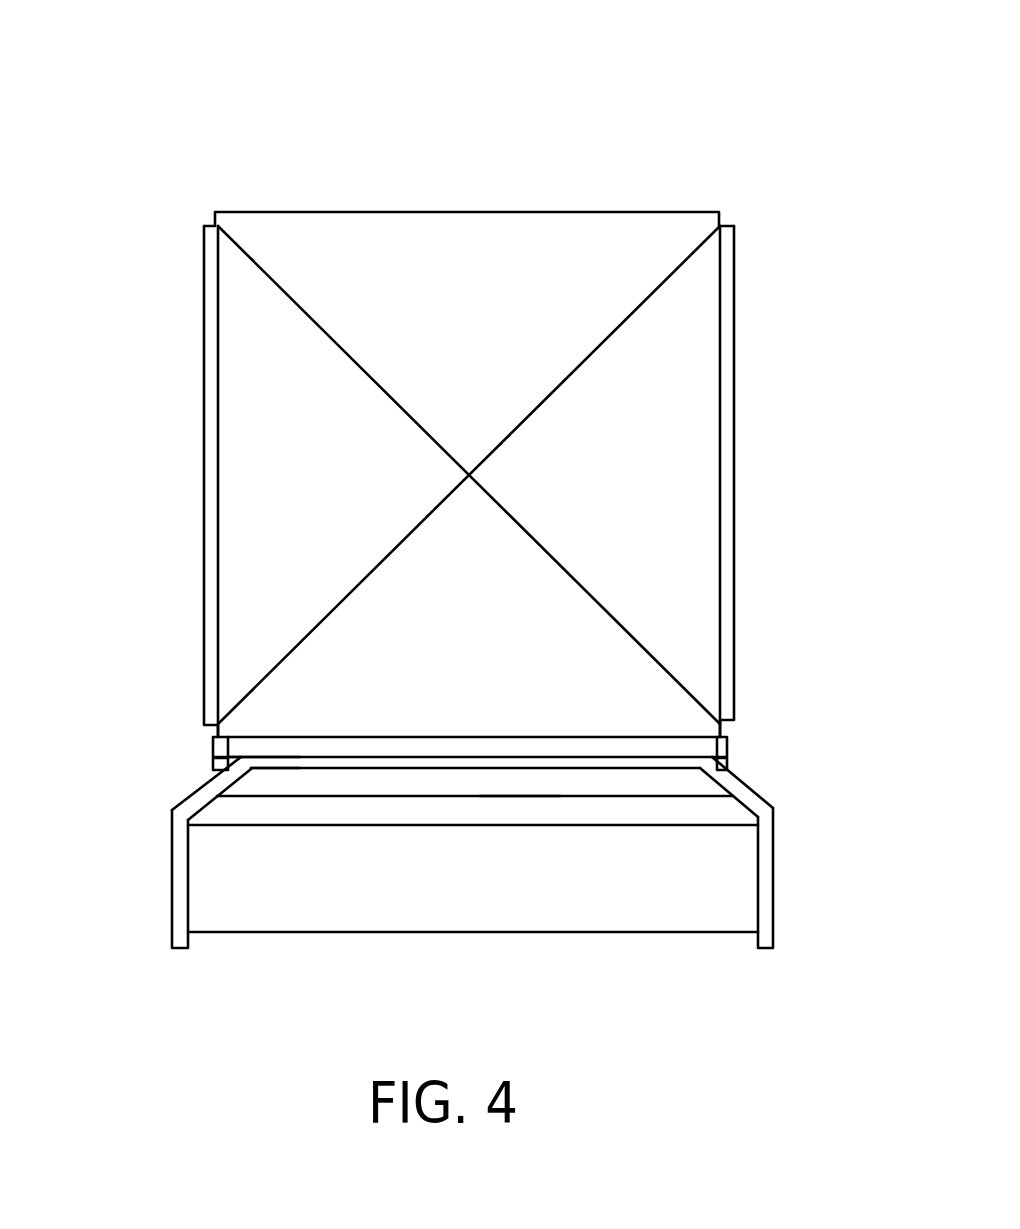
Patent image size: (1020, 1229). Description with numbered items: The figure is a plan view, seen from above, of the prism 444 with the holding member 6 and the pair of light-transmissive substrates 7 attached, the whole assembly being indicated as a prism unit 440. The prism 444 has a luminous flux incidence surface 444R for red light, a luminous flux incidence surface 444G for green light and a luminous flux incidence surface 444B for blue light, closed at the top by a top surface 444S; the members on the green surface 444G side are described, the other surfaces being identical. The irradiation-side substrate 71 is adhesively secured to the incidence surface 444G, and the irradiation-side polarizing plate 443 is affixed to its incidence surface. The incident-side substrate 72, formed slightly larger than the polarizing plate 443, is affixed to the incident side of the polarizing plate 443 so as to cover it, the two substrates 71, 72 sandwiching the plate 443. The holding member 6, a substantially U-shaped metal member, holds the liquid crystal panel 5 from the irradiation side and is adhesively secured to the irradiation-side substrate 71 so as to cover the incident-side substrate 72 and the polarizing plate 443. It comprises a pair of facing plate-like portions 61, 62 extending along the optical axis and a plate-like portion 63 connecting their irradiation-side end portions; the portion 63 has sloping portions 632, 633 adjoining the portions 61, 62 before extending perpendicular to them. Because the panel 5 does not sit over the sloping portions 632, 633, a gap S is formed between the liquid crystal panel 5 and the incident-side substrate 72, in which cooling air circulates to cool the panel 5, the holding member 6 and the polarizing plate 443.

The cross dichroic prism unit 440 is at (765, 152).
The top plate of prism 444S is at (383, 212).
The prism 444 is at (597, 237).
The luminous flux incidence surface 444R is at (203, 452).
The luminous flux incidence surface 444B is at (735, 443).
The luminous flux incidence surface 444G is at (462, 736).
The irradiation-side polarizing plate 443 is at (731, 757).
The pair of light-transmissive substrates 7 is at (80, 685).
The irradiation-side substrate 71 is at (262, 743).
The incident-side substrate 72 is at (248, 787).
The holding member 6 is at (765, 835).
The plate-like portion 63 is at (353, 763).
The sloping portion 632 is at (185, 800).
The sloping portion 633 is at (750, 790).
The plate-like portion 61 is at (178, 884).
The plate-like portion 62 is at (767, 890).
The liquid crystal panel 5 is at (510, 890).
The gap S is at (523, 805).